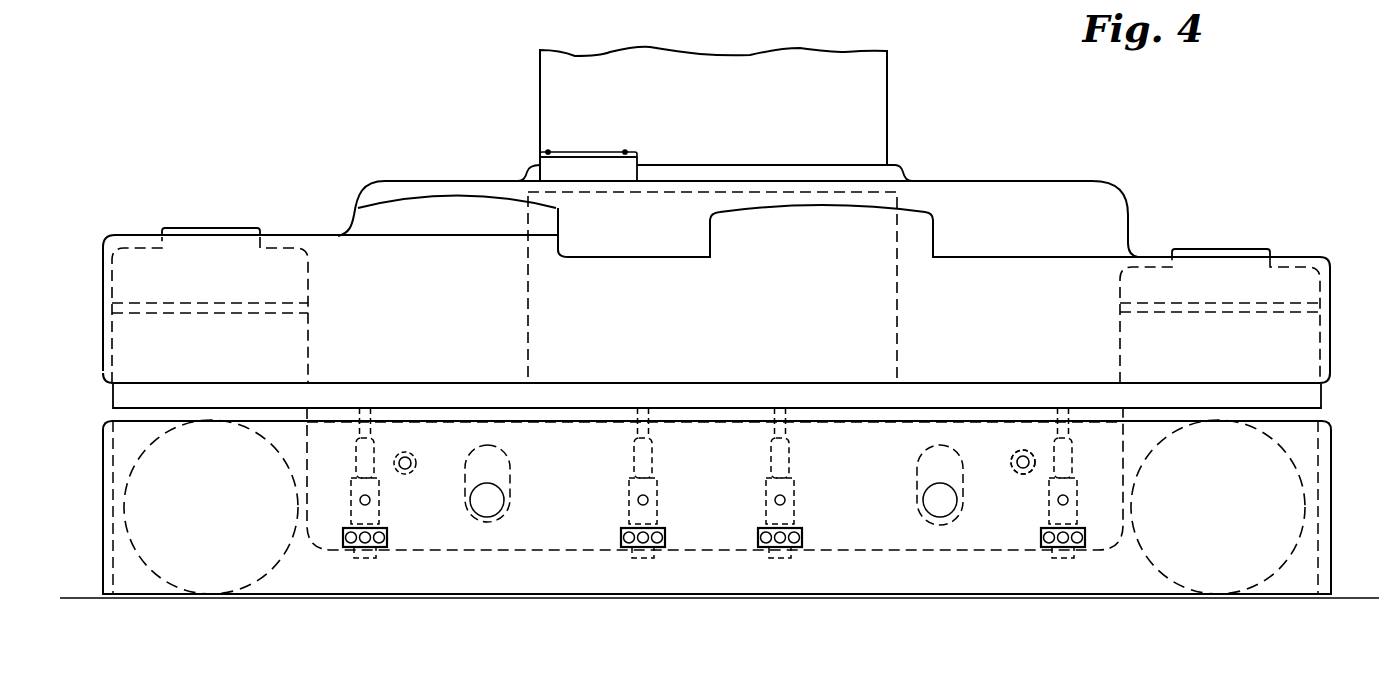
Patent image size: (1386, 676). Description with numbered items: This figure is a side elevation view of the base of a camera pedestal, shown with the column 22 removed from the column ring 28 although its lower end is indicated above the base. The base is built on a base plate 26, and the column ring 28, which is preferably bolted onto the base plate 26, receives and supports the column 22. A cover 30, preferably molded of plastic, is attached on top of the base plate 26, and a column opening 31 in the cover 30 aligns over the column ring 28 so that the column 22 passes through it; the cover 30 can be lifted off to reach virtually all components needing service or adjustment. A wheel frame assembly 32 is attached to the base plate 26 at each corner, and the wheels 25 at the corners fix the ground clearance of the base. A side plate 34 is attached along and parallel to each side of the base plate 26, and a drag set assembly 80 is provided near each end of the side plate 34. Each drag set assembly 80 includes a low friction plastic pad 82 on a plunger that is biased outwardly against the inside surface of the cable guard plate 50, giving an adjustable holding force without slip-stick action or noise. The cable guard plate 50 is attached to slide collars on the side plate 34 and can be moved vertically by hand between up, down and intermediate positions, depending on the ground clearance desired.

The column 22 is at (890, 68).
The wheels 25 is at (152, 570).
The base plate 26 is at (1302, 395).
The column ring 28 is at (525, 300).
The cover 30 is at (1054, 181).
The column opening 31 is at (892, 160).
The wheel frame assembly 32 is at (218, 257).
The side plate 34 is at (542, 550).
The cable guard plate 50 is at (312, 568).
The drag set assembly 80 is at (1008, 474).
The pad 82 is at (414, 471).